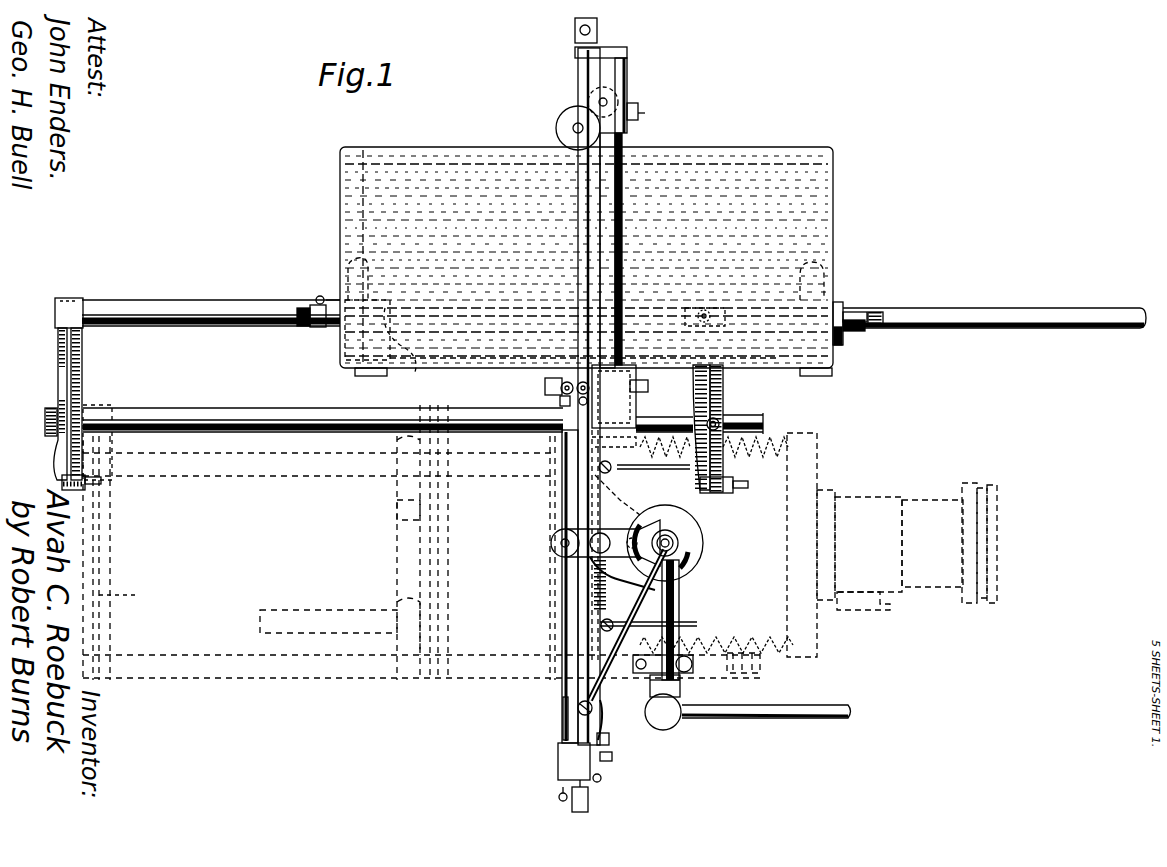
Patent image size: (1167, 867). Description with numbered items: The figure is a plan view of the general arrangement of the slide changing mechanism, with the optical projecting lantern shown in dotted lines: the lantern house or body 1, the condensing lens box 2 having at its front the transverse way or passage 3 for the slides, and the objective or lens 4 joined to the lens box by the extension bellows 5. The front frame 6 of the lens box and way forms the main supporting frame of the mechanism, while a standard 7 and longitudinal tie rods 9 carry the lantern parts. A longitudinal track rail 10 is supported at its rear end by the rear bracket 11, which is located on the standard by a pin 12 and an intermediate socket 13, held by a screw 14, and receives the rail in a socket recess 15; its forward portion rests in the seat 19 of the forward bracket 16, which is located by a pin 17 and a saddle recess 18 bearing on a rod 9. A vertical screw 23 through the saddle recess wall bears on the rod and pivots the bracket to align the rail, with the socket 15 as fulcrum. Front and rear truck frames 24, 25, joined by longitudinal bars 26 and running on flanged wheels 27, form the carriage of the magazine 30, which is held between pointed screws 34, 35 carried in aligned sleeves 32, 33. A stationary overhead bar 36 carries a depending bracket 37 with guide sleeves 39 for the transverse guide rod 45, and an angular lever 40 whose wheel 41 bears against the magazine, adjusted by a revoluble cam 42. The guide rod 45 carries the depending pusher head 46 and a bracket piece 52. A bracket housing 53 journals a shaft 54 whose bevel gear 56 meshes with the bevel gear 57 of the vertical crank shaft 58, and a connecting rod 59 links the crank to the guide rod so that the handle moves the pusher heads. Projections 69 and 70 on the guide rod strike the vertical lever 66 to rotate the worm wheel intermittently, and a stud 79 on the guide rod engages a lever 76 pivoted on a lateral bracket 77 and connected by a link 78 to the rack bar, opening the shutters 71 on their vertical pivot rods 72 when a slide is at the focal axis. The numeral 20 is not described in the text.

The lantern house 1 is at (421, 542).
The condensing lens box 2 is at (566, 575).
The transverse way 3 is at (568, 532).
The objective 4 is at (907, 546).
The extension bellows 5 is at (787, 632).
The front frame 6 is at (615, 520).
The standard 7 is at (124, 599).
The longitudinal tie rod 9 is at (195, 410).
The track rail 10 is at (212, 312).
The rear bracket 11 is at (84, 362).
The pin 12 is at (102, 482).
The intermediate socket 13 is at (82, 418).
The screw 14 is at (44, 420).
The socket recess 15 is at (56, 312).
The forward bracket 16 is at (724, 380).
The pin 17 is at (748, 486).
The saddle recess 18 is at (724, 452).
The seat 19 is at (706, 310).
The slide 20 is at (728, 312).
The vertical screw 23 is at (722, 420).
The front truck frame 24 is at (845, 306).
The rear truck frame 25 is at (340, 338).
The longitudinal bar 26 is at (465, 352).
The flanged wheel 27 is at (390, 330).
The magazine 30 is at (586, 261).
The sleeve 32 is at (855, 333).
The sleeve 33 is at (310, 324).
The pointed screw 34 is at (303, 308).
The pointed screw 35 is at (880, 328).
The overhead transverse bar 36 is at (612, 275).
The depending bracket 37 is at (628, 78).
The guide sleeve 39 is at (575, 52).
The angular lever 40 is at (593, 96).
The wheel 41 is at (555, 127).
The revoluble cam 42 is at (645, 113).
The transverse guide rod 45 is at (622, 160).
The pusher head 46 is at (558, 765).
The bracket piece 52 is at (600, 33).
The bracket housing 53 is at (690, 575).
The shaft 54 is at (682, 686).
The bevel gear 56 is at (700, 560).
The bevel gear 57 is at (680, 545).
The vertical crank shaft 58 is at (672, 540).
The connecting rod 59 is at (585, 580).
The vertical lever 66 is at (560, 400).
The projection 69 is at (545, 387).
The projection 70 is at (562, 712).
The shutter 71 is at (668, 470).
The vertical pivot rod 72 is at (611, 470).
The lever 76 is at (612, 740).
The lateral bracket 77 is at (605, 726).
The link 78 is at (593, 708).
The operating stud 79 is at (613, 757).